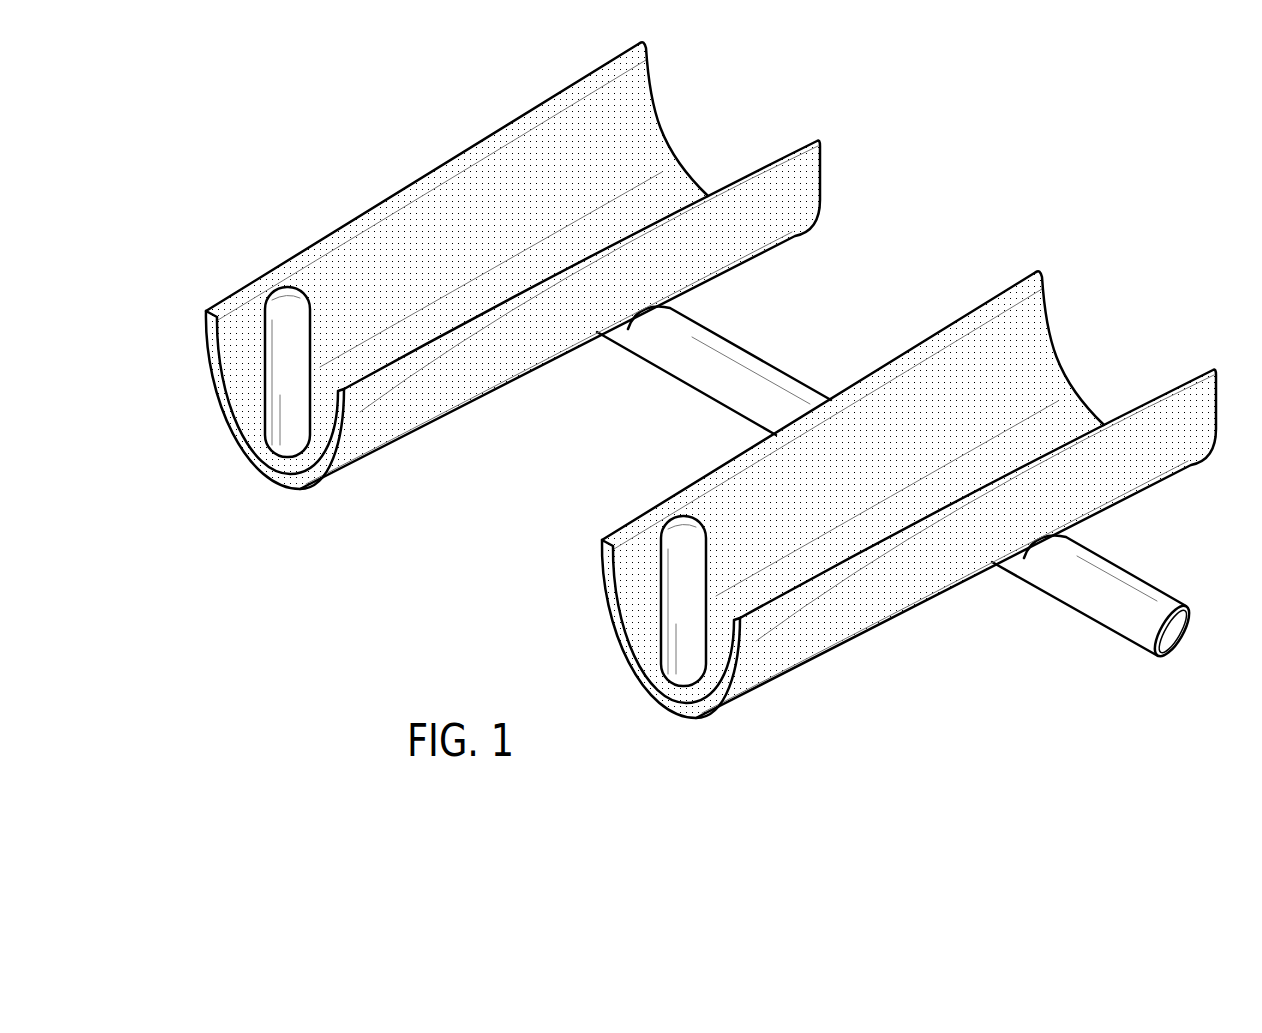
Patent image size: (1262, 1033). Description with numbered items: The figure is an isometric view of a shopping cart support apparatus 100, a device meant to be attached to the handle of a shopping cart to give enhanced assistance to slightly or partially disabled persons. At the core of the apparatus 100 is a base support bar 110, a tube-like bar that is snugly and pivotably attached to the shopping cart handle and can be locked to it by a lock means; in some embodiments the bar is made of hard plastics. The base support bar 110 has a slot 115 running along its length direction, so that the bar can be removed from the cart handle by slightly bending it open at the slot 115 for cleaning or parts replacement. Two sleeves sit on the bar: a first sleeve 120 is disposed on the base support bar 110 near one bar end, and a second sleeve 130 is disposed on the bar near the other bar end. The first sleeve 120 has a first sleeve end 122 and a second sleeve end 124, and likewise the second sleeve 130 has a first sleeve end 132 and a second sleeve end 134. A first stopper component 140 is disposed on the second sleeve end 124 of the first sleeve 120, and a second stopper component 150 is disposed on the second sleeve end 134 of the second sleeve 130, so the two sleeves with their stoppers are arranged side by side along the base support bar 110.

The shopping cart support apparatus 100 is at (682, 393).
The base support bar 110 is at (762, 372).
The slot 115 is at (1168, 646).
The first sleeve 120 is at (484, 265).
The first sleeve end 122 is at (650, 89).
The second sleeve end 124 is at (225, 413).
The second sleeve 130 is at (868, 479).
The first sleeve end 132 is at (1063, 370).
The second sleeve end 134 is at (604, 600).
The first stopper component 140 is at (287, 313).
The second stopper component 150 is at (682, 542).